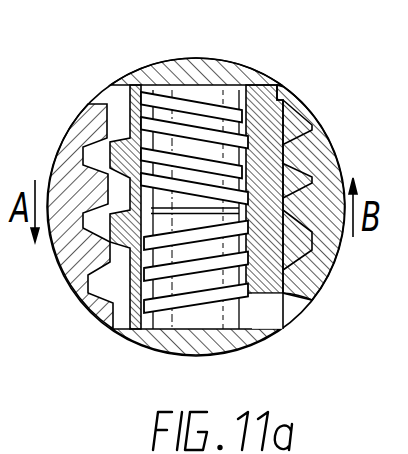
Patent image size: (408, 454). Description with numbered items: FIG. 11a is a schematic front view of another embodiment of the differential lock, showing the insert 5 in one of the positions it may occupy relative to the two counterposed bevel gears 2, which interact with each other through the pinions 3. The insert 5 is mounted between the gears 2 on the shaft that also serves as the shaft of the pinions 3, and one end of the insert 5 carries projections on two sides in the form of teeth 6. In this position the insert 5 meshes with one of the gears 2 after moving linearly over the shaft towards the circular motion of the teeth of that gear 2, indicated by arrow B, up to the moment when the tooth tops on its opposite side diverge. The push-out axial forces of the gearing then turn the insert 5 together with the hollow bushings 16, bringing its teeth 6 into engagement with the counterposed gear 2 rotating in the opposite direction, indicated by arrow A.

The bevel gear 2 is at (318, 149).
The pinion 3 is at (132, 80).
The insert 5 is at (258, 105).
The teeth 6 is at (295, 245).
The hollow bushings 16 is at (202, 110).